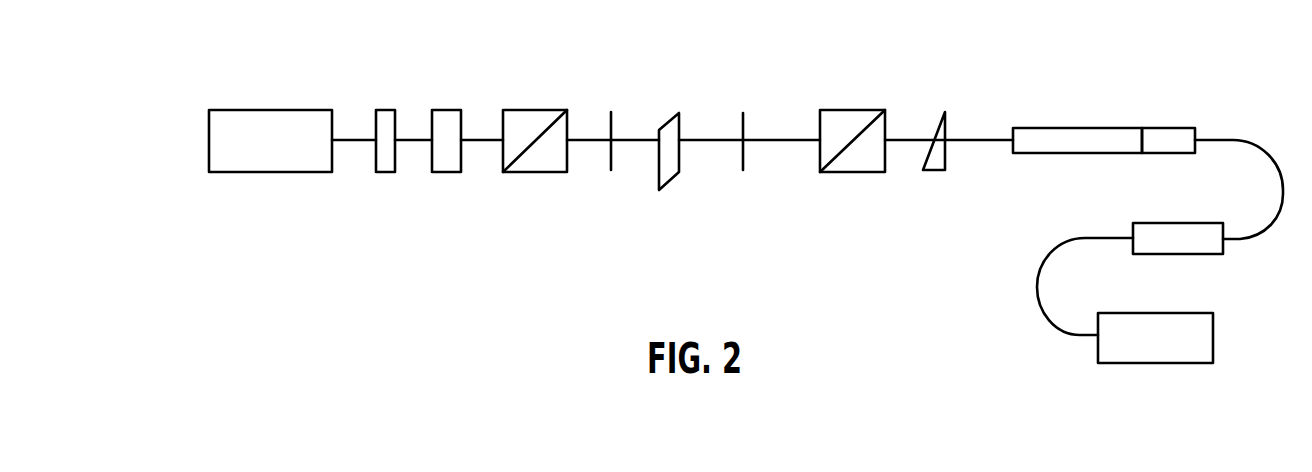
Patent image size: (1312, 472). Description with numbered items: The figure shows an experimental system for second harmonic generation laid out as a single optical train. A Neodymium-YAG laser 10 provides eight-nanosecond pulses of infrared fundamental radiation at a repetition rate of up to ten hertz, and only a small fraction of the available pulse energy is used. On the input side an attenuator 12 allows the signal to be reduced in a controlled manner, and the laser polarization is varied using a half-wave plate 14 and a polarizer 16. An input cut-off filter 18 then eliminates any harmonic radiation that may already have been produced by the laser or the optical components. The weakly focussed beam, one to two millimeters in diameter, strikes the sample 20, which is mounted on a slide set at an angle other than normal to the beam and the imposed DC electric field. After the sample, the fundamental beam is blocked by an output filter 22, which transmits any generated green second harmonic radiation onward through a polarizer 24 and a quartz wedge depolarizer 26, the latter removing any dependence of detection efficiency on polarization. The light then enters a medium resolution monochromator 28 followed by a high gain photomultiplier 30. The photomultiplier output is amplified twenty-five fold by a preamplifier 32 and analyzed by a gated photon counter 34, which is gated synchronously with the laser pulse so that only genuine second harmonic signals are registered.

The Neodymium-YAG laser 10 is at (288, 110).
The attenuator 12 is at (386, 112).
The half-wave plate 14 is at (445, 115).
The polarizer 16 is at (528, 118).
The input cut-off filter 18 is at (612, 127).
The sample 20 is at (670, 175).
The output filter 22 is at (743, 127).
The polarizer 24 is at (848, 110).
The quartz wedge depolarizer 26 is at (932, 130).
The monochromator 28 is at (1057, 127).
The photomultiplier 30 is at (1162, 127).
The preamplifier 32 is at (1195, 250).
The gated photon counter 34 is at (1207, 348).